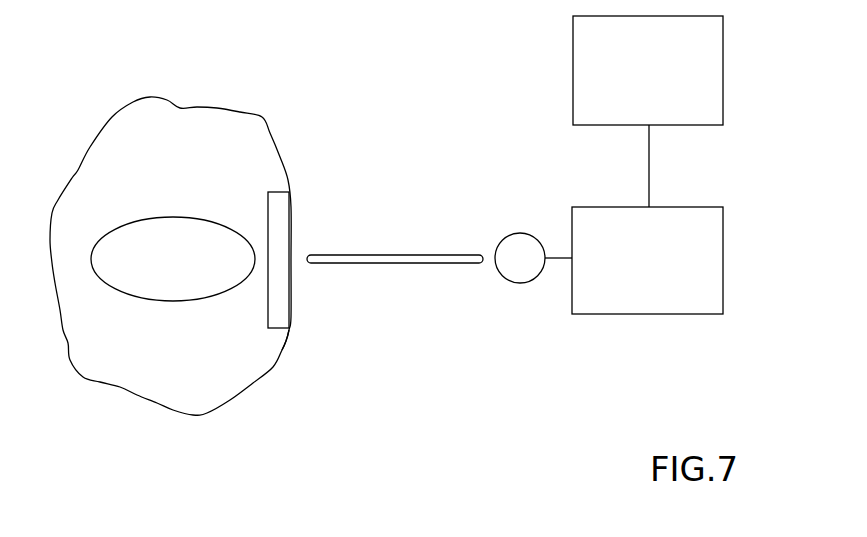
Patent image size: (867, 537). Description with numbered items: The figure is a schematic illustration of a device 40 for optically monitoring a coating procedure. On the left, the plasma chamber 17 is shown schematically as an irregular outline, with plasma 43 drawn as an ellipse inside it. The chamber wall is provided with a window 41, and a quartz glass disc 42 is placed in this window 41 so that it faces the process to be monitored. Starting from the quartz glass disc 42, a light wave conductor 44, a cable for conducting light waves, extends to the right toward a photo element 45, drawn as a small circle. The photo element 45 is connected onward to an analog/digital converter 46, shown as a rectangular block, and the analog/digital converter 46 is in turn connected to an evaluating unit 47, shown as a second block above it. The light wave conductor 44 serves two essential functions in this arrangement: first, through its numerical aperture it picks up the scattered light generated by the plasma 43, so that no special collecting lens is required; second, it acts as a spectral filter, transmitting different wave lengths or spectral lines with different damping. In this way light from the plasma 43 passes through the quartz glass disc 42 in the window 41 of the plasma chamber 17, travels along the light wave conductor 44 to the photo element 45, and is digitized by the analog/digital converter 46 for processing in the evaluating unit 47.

The plasma chamber 17 is at (262, 118).
The device for optically monitoring a coating procedure 40 is at (443, 387).
The window 41 is at (283, 352).
The quartz glass disc 42 is at (281, 224).
The plasma 43 is at (174, 280).
The light wave conductor 44 is at (420, 255).
The photo element 45 is at (515, 233).
The analog/digital converter 46 is at (708, 206).
The evaluating unit 47 is at (573, 80).